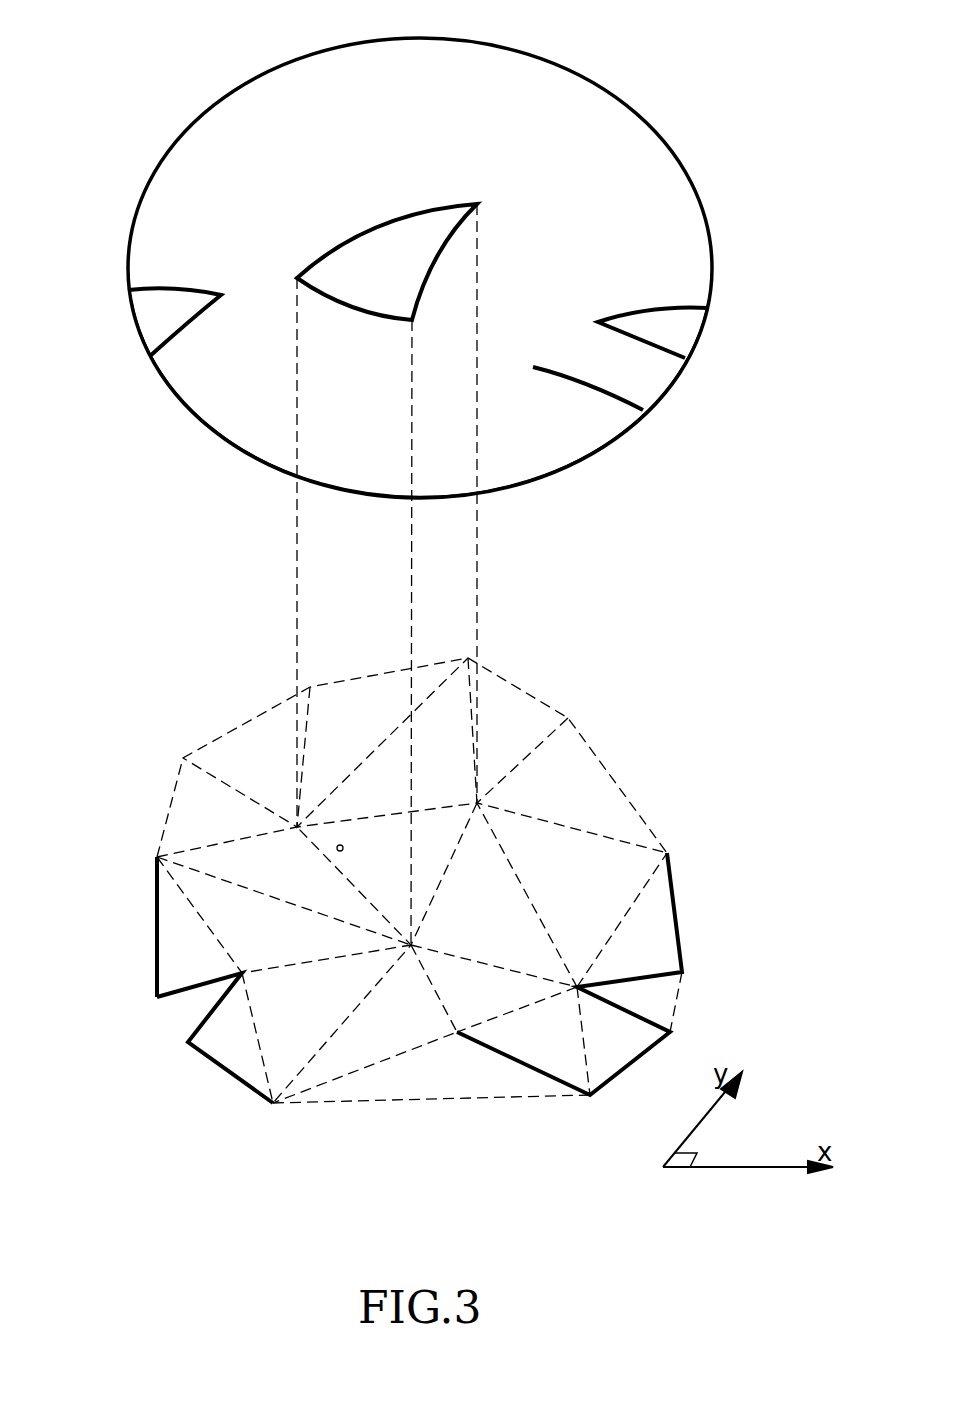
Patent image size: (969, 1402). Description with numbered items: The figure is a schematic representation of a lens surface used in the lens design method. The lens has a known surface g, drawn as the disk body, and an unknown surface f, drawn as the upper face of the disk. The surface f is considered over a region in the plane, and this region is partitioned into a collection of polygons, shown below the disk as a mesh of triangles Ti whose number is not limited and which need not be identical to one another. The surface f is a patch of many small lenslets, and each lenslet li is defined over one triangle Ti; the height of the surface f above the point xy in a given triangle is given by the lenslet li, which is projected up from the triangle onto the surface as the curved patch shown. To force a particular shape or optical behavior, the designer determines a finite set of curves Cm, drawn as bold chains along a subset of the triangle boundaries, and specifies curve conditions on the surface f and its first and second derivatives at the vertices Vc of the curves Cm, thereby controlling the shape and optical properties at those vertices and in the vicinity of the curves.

The unknown lens surface f is at (572, 140).
The known lens surface g is at (615, 455).
The lenslet li is at (382, 257).
The triangle Ti is at (328, 837).
The curve Cm is at (157, 920).
The vertex of curve Vc is at (273, 1103).
The point (x,y) xy is at (374, 851).